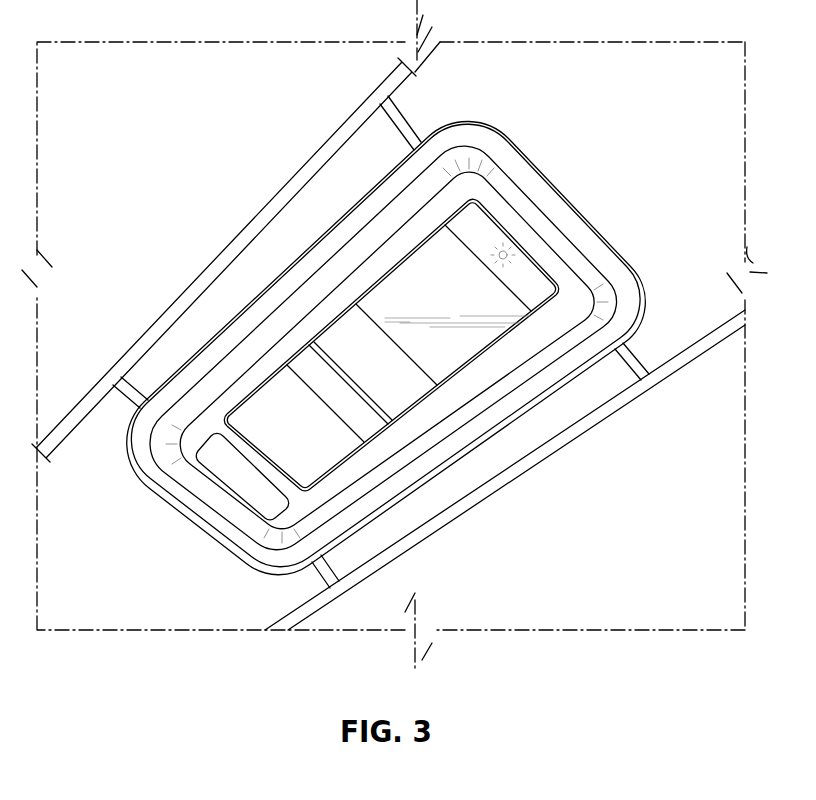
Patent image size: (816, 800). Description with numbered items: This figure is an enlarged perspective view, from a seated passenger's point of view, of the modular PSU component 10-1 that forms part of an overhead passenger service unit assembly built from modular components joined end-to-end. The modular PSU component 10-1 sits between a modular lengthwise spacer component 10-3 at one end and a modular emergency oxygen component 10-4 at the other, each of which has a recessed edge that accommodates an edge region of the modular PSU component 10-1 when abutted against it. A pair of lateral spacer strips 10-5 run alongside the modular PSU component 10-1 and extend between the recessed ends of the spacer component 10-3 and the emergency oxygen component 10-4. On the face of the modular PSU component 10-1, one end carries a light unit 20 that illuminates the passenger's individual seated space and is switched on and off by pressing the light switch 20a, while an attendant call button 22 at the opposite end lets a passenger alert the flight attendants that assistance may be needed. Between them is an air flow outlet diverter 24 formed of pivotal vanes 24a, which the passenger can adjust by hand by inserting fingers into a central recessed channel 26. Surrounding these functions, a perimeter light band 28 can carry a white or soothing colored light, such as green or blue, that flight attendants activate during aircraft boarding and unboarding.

The modular PSU component 10-1 is at (464, 134).
The modular lengthwise spacer component 10-3 is at (650, 124).
The modular emergency oxygen component 10-4 is at (67, 592).
The lateral spacer strips 10-5 is at (327, 187).
The light unit 20 is at (418, 298).
The light switch 20a is at (470, 234).
The attendant call button 22 is at (233, 484).
The air flow outlet diverter 24 is at (336, 450).
The pivotal vanes 24a is at (305, 398).
The central recessed channel 26 is at (364, 370).
The perimeter light band 28 is at (543, 357).